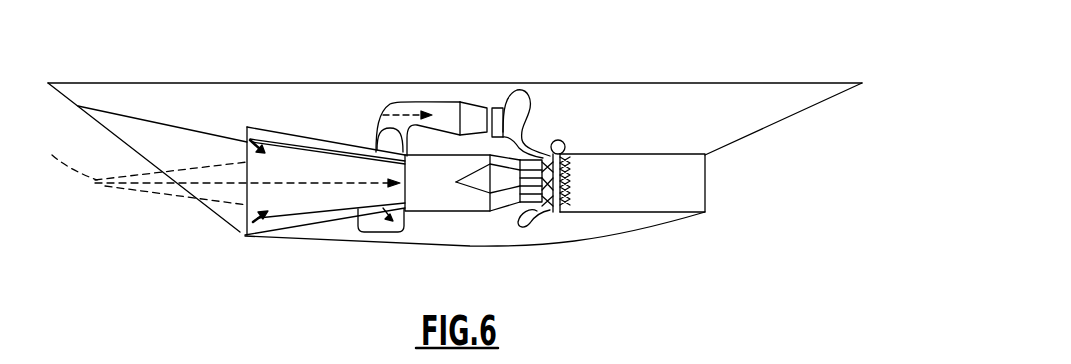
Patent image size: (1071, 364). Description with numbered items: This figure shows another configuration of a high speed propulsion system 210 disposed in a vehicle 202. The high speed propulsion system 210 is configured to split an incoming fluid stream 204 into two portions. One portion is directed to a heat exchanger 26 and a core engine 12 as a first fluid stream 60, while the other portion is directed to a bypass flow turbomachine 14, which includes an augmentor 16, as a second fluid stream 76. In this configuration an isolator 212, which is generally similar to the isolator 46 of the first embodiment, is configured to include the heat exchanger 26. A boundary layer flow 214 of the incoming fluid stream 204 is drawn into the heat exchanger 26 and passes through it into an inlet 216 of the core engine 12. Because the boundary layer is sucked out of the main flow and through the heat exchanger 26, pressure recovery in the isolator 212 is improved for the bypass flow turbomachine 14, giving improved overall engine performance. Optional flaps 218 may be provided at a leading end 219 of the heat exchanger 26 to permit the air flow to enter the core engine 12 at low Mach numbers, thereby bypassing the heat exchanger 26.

The high speed propulsion system 210 is at (749, 56).
The vehicle 202 is at (235, 82).
The incoming fluid stream 204 is at (92, 174).
The leading end 219 is at (222, 235).
The flaps 218 is at (245, 139).
The heat exchanger 26 is at (271, 128).
The boundary layer flow 214 is at (307, 143).
The isolator 212 is at (279, 231).
The inlet 216 is at (394, 101).
The second fluid stream 76 is at (310, 183).
The first fluid stream 60 is at (352, 142).
The isolator 46 is at (433, 212).
The core engine 12 is at (457, 76).
The bypass flow turbomachine 14 is at (462, 253).
The augmentor 16 is at (558, 133).